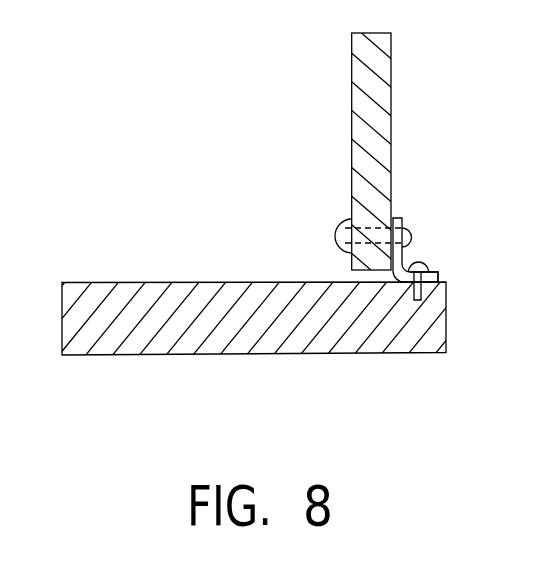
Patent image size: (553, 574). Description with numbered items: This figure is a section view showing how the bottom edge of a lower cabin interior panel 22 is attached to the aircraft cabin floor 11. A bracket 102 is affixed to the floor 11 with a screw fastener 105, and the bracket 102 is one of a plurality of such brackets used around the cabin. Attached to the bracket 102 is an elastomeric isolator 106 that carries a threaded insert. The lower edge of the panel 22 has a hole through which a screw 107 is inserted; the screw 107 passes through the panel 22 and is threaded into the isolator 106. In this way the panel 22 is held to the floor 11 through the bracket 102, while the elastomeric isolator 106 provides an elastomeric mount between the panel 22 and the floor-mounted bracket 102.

The aircraft cabin floor 11 is at (150, 354).
The panel 22 is at (373, 117).
The bracket 102 is at (437, 272).
The screw fastener 105 is at (418, 263).
The elastomeric isolator 106 is at (403, 218).
The screw 107 is at (335, 233).